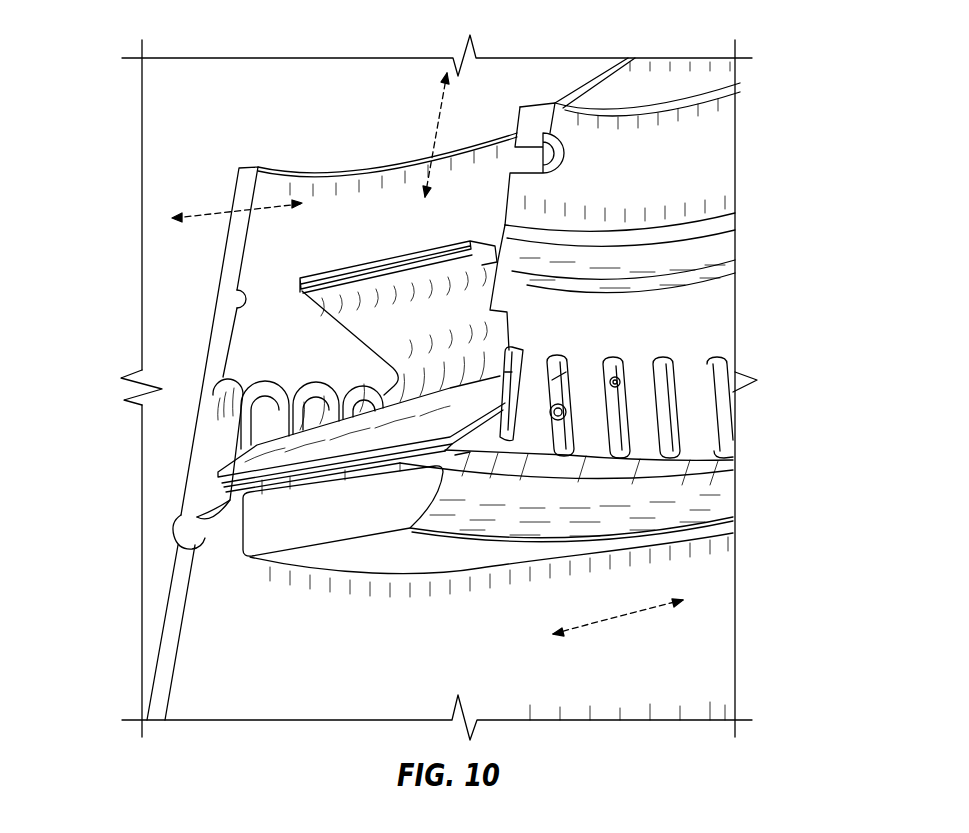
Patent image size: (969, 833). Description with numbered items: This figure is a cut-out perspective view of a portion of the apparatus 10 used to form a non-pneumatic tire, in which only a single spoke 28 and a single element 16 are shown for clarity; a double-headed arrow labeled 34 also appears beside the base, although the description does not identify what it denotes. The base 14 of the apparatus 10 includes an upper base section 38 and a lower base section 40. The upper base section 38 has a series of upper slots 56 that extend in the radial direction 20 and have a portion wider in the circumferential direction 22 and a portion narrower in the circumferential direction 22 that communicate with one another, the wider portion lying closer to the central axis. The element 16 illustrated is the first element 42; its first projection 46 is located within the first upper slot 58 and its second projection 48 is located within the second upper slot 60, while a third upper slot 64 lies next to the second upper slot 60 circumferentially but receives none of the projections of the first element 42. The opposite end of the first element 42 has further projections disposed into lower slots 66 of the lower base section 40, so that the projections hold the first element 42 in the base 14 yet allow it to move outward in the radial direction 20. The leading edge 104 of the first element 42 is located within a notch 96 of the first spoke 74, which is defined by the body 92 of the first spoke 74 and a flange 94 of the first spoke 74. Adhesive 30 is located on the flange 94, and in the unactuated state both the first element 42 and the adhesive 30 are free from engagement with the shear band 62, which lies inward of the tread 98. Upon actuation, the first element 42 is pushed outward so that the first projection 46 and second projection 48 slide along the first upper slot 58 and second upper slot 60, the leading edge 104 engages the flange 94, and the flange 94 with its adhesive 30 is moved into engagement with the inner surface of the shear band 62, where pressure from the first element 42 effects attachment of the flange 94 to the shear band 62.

The apparatus 10 is at (706, 50).
The base 14 is at (725, 635).
The element 16 is at (613, 392).
The radial direction 20 is at (437, 127).
The circumferential direction 22 is at (623, 623).
The spoke 28 is at (330, 273).
The adhesive 30 is at (317, 480).
The radial direction 34 is at (223, 212).
The upper base section 38 is at (723, 163).
The lower base section 40 is at (243, 693).
The first element 42 is at (622, 362).
The first projection 46 is at (548, 445).
The second projection 48 is at (623, 383).
The upper slots 56 is at (557, 360).
The first upper slot 58 is at (568, 365).
The second upper slot 60 is at (558, 425).
The shear band 62 is at (502, 527).
The third upper slot 64 is at (678, 360).
The lower slots 66 is at (255, 410).
The first spoke 74 is at (382, 257).
The body 92 is at (375, 325).
The flange 94 is at (265, 447).
The notch 96 is at (462, 452).
The tread 98 is at (390, 563).
The leading edge 104 is at (195, 522).